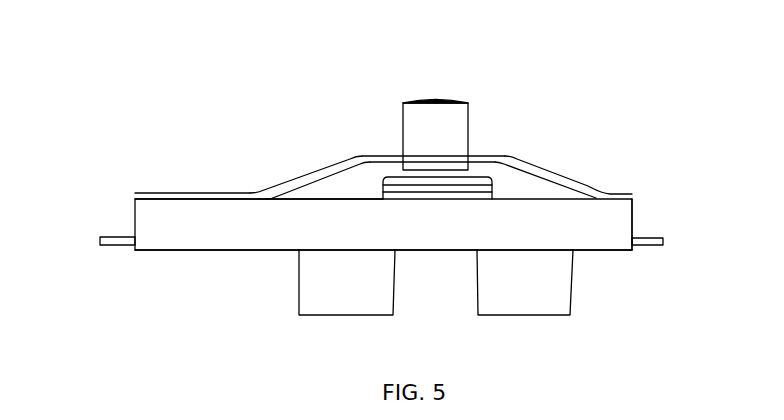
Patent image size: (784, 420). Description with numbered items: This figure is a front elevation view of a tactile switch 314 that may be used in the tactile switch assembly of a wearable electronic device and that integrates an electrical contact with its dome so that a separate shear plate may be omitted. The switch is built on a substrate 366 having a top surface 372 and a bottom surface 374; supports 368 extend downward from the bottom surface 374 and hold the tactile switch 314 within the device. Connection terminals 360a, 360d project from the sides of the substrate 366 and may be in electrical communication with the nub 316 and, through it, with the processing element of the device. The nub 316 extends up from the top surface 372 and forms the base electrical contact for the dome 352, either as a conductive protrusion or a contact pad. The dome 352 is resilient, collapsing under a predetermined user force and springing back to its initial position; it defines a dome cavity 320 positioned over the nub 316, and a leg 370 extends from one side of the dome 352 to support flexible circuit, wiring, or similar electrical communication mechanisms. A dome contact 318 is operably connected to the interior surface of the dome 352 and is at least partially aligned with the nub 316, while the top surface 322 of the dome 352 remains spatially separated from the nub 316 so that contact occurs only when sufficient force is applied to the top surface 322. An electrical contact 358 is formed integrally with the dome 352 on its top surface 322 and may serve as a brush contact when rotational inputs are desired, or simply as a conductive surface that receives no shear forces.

The tactile switch 314 is at (401, 135).
The nub 316 is at (489, 179).
The dome contact 318 is at (440, 172).
The dome cavity 320 is at (344, 180).
The top surface of the dome 322 is at (365, 157).
The dome 352 is at (597, 185).
The electrical contact 358 is at (458, 123).
The connection terminal 360a is at (653, 247).
The connection terminal 360d is at (107, 237).
The substrate 366 is at (602, 236).
The supports 368 is at (552, 302).
The leg 370 is at (190, 192).
The top surface of the substrate 372 is at (327, 190).
The bottom surface of the substrate 374 is at (175, 248).